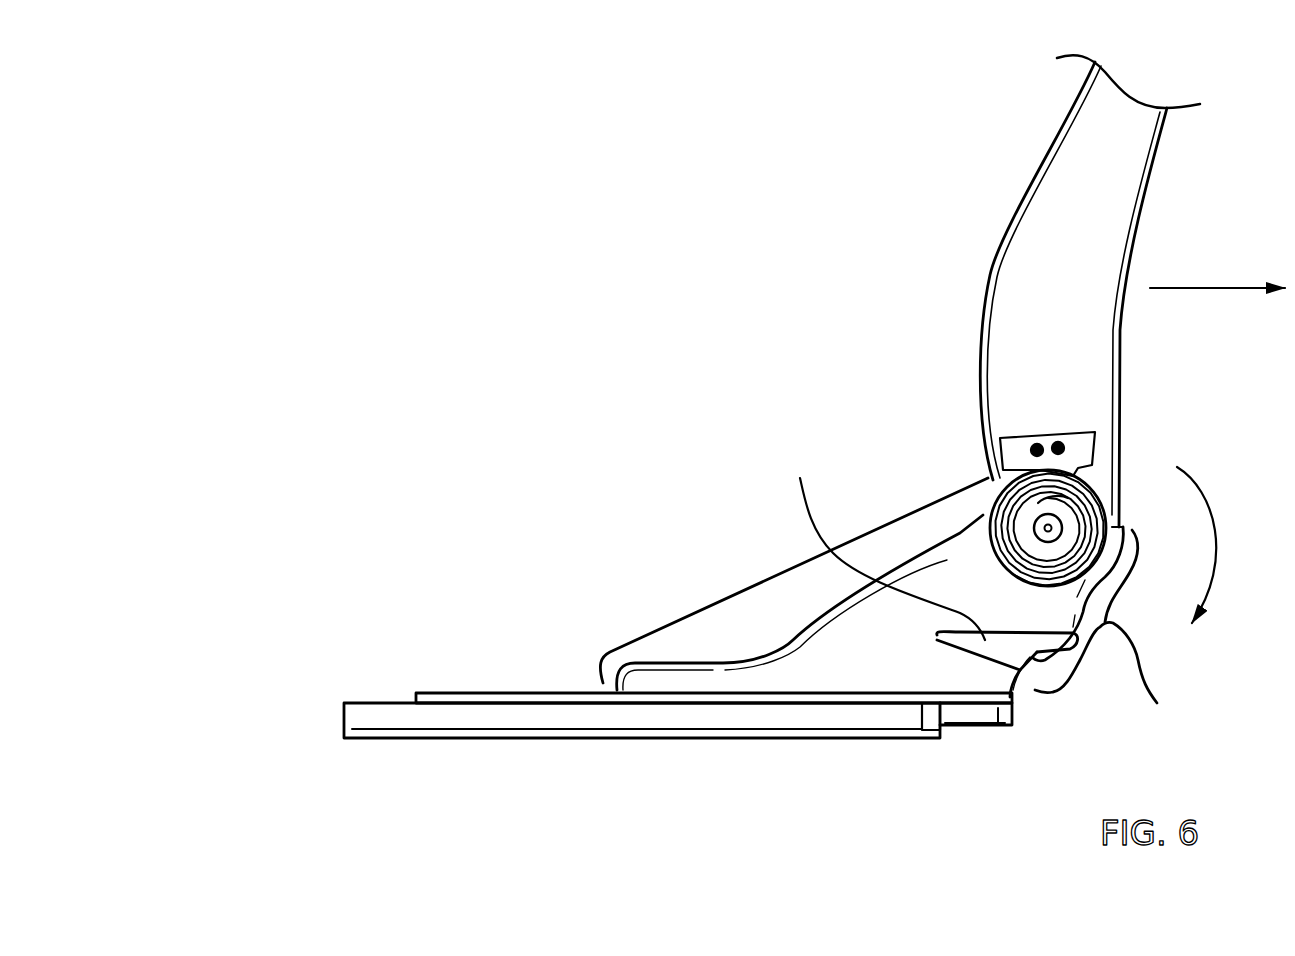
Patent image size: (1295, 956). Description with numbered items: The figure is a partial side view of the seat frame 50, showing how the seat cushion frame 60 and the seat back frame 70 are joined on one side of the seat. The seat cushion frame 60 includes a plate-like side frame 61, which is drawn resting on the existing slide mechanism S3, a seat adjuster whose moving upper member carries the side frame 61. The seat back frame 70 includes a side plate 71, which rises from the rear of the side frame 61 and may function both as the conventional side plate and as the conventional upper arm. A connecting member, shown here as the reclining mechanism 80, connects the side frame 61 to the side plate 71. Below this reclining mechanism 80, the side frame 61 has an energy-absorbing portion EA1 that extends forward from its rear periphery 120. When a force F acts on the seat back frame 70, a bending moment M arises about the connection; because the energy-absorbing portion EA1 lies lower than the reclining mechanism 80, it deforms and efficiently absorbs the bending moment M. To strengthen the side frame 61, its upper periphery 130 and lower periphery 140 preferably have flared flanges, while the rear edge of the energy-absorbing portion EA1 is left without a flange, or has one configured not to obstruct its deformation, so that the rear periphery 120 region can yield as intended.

The seat frame 50 is at (522, 152).
The seat cushion frame 60 is at (635, 445).
The side frame 61 is at (793, 637).
The seat back frame 70 is at (800, 103).
The side plate 71 is at (990, 268).
The reclining mechanism 80 is at (978, 482).
The rear periphery 120 is at (1157, 703).
The upper periphery 130 is at (813, 551).
The lower periphery 140 is at (625, 712).
The energy-absorbing portion EA1 is at (880, 543).
The slide mechanism S3 is at (330, 706).
The force F is at (1217, 269).
The bending moment M is at (1216, 545).